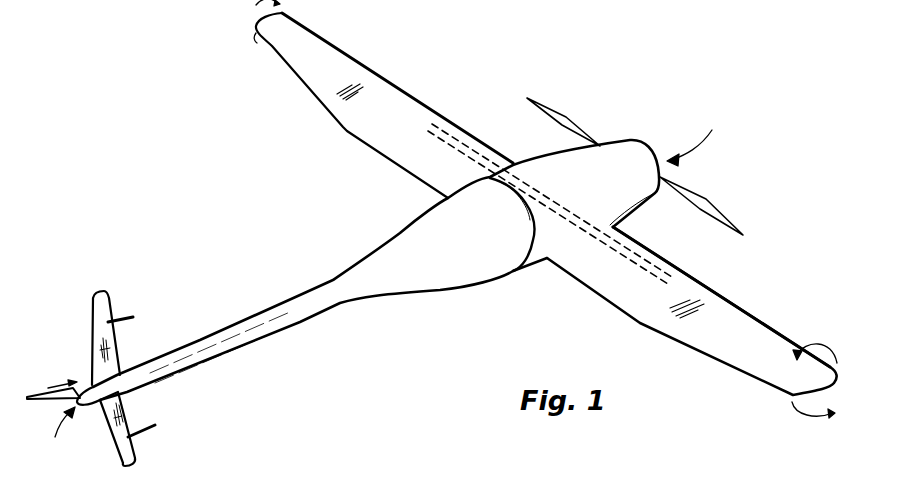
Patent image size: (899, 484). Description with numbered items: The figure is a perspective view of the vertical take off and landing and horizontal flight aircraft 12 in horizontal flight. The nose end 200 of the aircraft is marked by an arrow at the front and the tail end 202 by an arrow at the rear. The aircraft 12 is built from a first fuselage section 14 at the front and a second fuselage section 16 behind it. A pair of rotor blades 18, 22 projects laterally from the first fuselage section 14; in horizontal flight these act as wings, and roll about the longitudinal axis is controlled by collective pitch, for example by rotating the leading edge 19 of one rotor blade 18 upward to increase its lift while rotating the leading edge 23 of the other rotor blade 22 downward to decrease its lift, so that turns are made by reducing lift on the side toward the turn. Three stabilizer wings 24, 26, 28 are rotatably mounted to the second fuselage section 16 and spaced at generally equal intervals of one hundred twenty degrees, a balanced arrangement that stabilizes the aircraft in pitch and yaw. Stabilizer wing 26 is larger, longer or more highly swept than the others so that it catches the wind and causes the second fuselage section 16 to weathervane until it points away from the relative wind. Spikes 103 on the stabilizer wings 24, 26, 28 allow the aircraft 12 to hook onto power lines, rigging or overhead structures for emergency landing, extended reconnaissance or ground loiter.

The aircraft 12 is at (513, 112).
The first fuselage section 14 is at (612, 158).
The second fuselage section 16 is at (458, 258).
The rotor blade 18 is at (740, 328).
The leading edge 19 is at (682, 269).
The rotor blade 22 is at (392, 106).
The leading edge 23 is at (447, 115).
The stabilizer wing 24 is at (44, 387).
The stabilizer wing 26 is at (105, 293).
The stabilizer wing 28 is at (133, 448).
The spike 103 is at (120, 316).
The nose end 200 is at (696, 139).
The tail end 202 is at (56, 433).